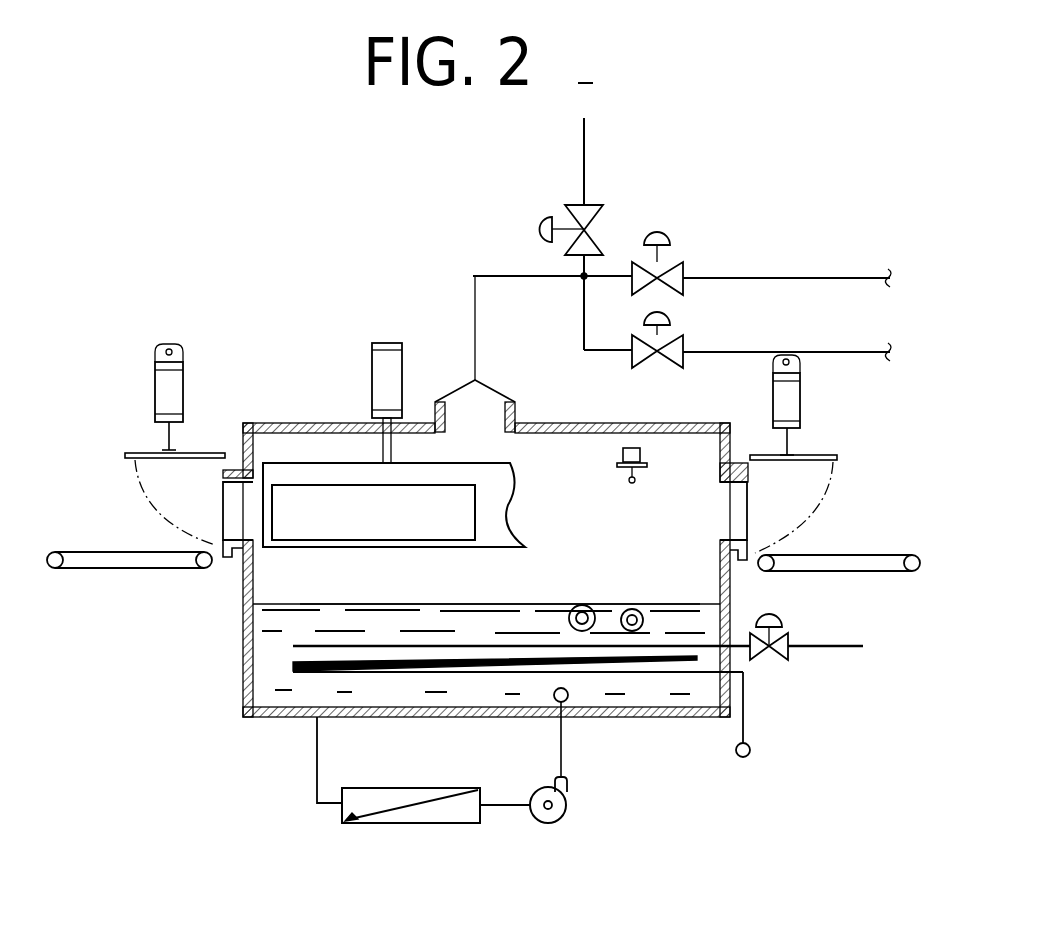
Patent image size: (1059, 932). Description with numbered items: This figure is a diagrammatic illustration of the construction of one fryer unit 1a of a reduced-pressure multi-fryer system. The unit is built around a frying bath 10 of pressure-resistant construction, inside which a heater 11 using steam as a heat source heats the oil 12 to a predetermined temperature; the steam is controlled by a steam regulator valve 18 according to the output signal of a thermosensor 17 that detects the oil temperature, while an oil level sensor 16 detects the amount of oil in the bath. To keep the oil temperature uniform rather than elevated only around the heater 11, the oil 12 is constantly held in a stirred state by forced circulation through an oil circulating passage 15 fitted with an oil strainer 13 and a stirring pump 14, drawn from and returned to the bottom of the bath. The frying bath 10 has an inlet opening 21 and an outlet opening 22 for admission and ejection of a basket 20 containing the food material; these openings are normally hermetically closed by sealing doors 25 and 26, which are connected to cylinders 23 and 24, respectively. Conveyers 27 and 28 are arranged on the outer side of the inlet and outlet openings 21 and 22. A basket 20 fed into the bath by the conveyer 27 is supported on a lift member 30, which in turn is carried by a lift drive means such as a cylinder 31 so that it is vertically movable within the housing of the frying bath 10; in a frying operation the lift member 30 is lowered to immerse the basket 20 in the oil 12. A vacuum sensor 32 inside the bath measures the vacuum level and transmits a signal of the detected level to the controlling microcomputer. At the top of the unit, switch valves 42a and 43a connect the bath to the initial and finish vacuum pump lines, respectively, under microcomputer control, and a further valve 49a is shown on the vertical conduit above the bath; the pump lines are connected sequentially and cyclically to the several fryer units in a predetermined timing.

The fryer unit 1a is at (300, 332).
The frying bath 10 is at (243, 661).
The heater 11 is at (290, 716).
The oil 12 is at (445, 618).
The oil strainer 13 is at (420, 825).
The stirring pump 14 is at (548, 824).
The oil circulating passage 15 is at (330, 808).
The oil level sensor 16 is at (583, 604).
The thermosensor 17 is at (633, 607).
The steam regulator valve 18 is at (785, 655).
The basket 20 is at (333, 498).
The inlet opening 21 is at (235, 513).
The outlet opening 22 is at (737, 522).
The cylinder 23 is at (160, 378).
The cylinder 24 is at (793, 398).
The sealing door 25 is at (137, 450).
The sealing door 26 is at (825, 457).
The conveyer 27 is at (102, 563).
The conveyer 28 is at (845, 572).
The lift member 30 is at (292, 458).
The cylinder 31 is at (387, 344).
The vacuum sensor 32 is at (622, 458).
The exhaust valve 49a is at (592, 206).
The switch valve 42a is at (680, 262).
The switch valve 43a is at (680, 346).